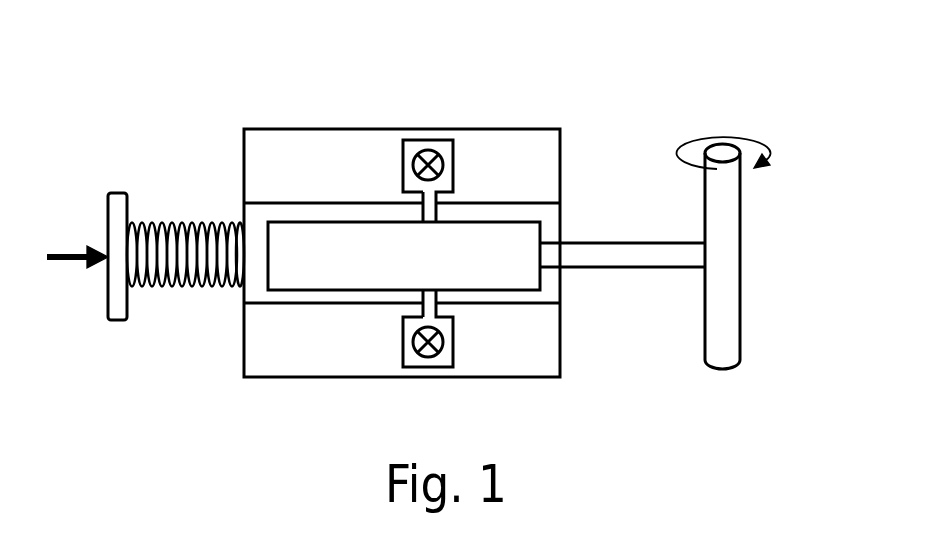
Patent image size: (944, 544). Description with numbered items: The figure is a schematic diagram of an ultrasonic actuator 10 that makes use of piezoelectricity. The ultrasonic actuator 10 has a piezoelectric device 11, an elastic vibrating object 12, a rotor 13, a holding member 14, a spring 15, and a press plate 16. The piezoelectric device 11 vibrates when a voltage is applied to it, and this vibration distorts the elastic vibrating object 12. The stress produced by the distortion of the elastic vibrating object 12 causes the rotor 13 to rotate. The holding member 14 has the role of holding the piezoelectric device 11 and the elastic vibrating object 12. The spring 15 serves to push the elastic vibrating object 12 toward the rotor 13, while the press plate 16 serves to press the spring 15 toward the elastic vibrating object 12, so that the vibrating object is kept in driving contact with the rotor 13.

The ultrasonic actuator 10 is at (653, 110).
The piezoelectric device 11 is at (517, 268).
The elastic vibrating object 12 is at (658, 257).
The rotor 13 is at (720, 297).
The holding member 14 is at (433, 140).
The spring 15 is at (188, 225).
The press plate 16 is at (120, 322).